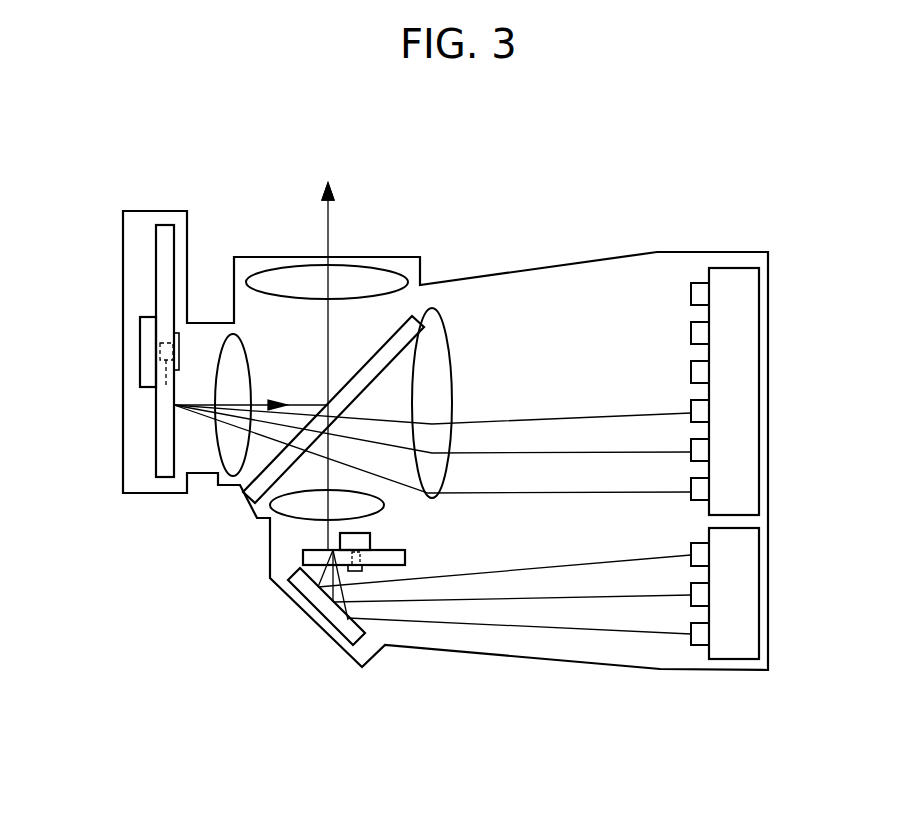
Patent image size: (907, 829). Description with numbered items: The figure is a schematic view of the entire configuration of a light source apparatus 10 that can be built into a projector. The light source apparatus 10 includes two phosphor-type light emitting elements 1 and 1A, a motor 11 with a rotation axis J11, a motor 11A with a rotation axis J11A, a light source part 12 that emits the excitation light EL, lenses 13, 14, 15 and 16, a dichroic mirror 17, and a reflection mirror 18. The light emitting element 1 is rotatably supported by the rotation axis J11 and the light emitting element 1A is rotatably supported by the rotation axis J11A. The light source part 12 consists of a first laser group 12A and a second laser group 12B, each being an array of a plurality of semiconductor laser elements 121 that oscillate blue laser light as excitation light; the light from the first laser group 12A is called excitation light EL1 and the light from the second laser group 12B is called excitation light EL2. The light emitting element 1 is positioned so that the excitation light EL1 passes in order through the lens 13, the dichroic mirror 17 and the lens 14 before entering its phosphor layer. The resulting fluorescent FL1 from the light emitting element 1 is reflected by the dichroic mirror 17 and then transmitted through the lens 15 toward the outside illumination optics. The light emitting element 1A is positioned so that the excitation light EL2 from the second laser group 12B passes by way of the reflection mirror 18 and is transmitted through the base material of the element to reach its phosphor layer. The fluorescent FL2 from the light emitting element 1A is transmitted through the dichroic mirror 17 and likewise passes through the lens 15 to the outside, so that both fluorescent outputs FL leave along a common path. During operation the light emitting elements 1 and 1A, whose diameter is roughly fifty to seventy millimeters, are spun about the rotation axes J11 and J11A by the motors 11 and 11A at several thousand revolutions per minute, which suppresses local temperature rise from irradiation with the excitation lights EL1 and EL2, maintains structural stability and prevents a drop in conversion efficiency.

The light emitting element 1 is at (168, 233).
The light source apparatus 10 is at (738, 188).
The motor 11 is at (150, 357).
The rotation axis J11 is at (166, 388).
The light source part 12 is at (793, 463).
The first laser group 12A is at (742, 407).
The second laser group 12B is at (742, 608).
The semiconductor laser element 121 is at (695, 490).
The lens 13 is at (443, 355).
The lens 14 is at (228, 453).
The lens 15 is at (366, 277).
The lens 16 is at (283, 507).
The dichroic mirror 17 is at (403, 318).
The reflection mirror 18 is at (328, 607).
The light emitting element 1A is at (397, 558).
The motor 11A is at (283, 558).
The rotation axis J11A is at (363, 555).
The excitation light EL is at (325, 222).
The fluorescent FL is at (325, 222).
The fluorescent FL1 is at (303, 402).
The fluorescent FL2 is at (275, 578).
The excitation light EL1 is at (660, 492).
The excitation light EL2 is at (592, 630).